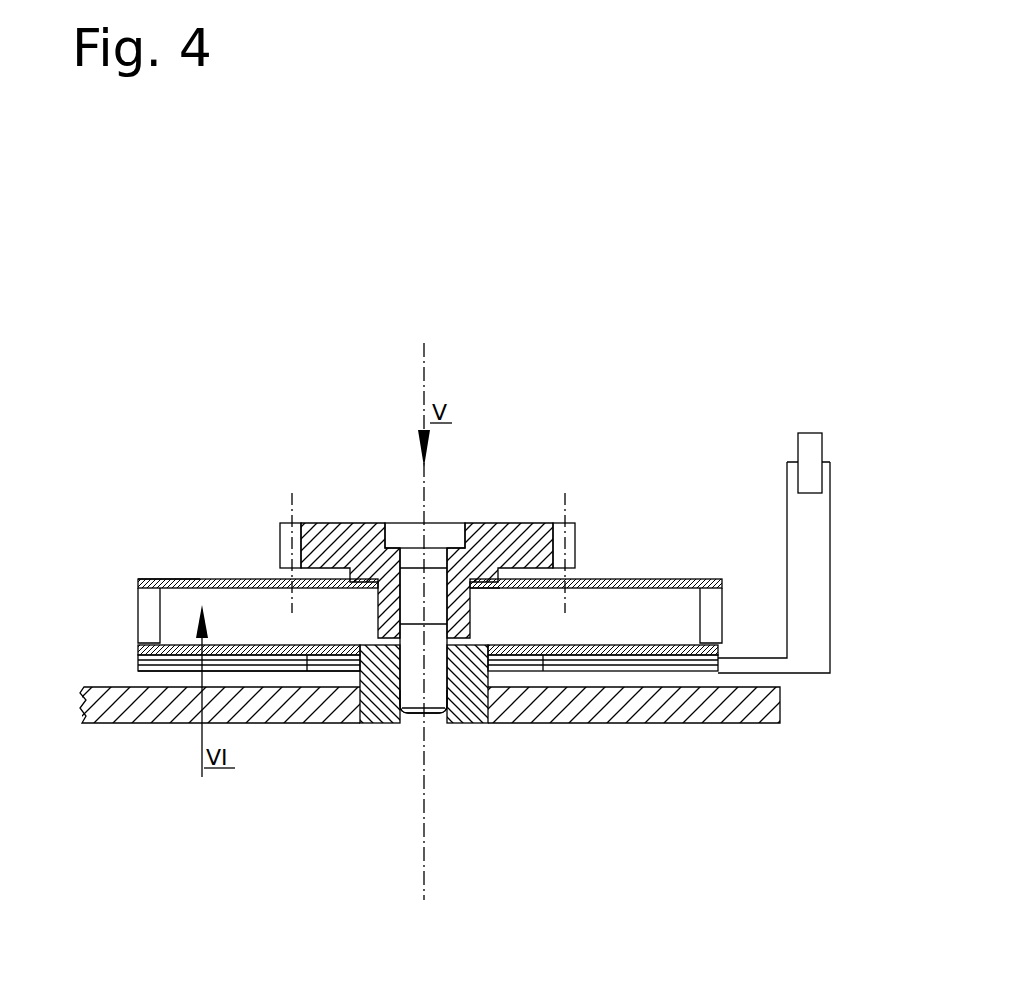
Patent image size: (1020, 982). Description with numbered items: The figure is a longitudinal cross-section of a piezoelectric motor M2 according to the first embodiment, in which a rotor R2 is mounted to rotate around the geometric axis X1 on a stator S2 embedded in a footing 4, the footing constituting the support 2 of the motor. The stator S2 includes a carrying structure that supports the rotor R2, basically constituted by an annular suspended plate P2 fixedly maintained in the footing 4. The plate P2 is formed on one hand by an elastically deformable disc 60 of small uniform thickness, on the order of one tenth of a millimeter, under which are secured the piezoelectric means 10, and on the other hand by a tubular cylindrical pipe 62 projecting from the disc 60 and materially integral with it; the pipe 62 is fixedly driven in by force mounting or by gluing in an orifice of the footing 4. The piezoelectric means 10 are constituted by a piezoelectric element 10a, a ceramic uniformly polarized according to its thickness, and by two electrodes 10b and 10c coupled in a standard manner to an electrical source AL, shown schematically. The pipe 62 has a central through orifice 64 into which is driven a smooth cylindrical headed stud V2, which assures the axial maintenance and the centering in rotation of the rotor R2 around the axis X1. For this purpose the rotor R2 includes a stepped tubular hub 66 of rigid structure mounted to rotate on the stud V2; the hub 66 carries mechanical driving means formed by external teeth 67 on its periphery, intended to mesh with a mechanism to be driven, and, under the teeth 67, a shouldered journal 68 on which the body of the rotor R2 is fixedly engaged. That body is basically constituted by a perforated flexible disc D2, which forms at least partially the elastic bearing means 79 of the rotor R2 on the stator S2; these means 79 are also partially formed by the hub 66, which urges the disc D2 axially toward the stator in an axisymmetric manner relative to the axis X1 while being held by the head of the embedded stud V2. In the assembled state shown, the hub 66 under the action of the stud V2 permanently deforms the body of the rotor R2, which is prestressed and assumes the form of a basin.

The support 2 is at (727, 782).
The footing 4 is at (600, 720).
The piezoelectric means 10 is at (361, 728).
The piezoelectric element 10a is at (133, 667).
The electrode 10b is at (137, 658).
The electrode 10c is at (142, 671).
The elastically deformable disc 60 is at (270, 650).
The tubular cylindrical pipe 62 is at (373, 722).
The central through orifice 64 is at (412, 720).
The stepped tubular hub 66 is at (322, 523).
The external teeth 67 is at (285, 579).
The shouldered journal 68 is at (484, 589).
The elastic bearing means 79 is at (203, 434).
The perforated flexible disc D2 is at (183, 579).
The smooth cylindrical headed stud V2 is at (410, 523).
The piezoelectric motor M2 is at (587, 441).
The rotor R2 is at (681, 514).
The annular suspended plate P2 is at (644, 630).
The stator S2 is at (735, 653).
The electrical source AL is at (808, 442).
The geometric axis X1 is at (423, 813).